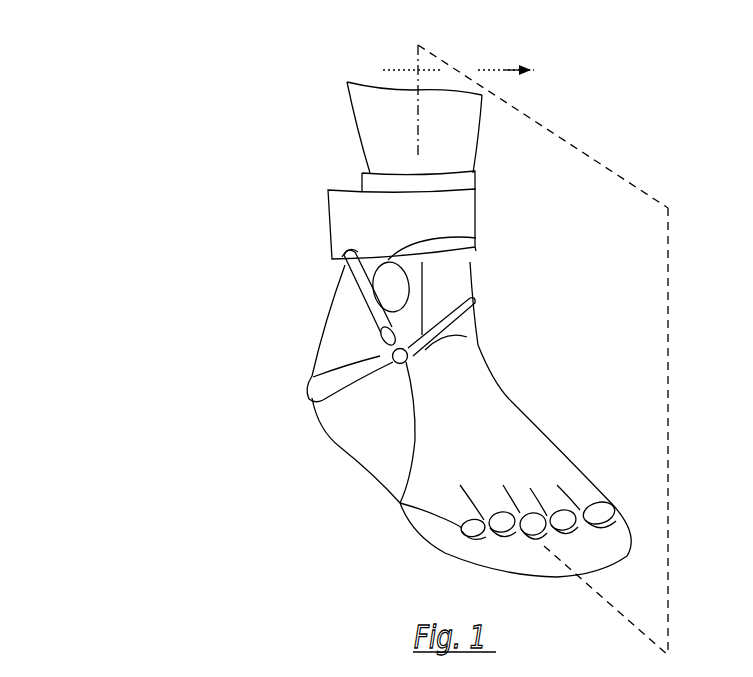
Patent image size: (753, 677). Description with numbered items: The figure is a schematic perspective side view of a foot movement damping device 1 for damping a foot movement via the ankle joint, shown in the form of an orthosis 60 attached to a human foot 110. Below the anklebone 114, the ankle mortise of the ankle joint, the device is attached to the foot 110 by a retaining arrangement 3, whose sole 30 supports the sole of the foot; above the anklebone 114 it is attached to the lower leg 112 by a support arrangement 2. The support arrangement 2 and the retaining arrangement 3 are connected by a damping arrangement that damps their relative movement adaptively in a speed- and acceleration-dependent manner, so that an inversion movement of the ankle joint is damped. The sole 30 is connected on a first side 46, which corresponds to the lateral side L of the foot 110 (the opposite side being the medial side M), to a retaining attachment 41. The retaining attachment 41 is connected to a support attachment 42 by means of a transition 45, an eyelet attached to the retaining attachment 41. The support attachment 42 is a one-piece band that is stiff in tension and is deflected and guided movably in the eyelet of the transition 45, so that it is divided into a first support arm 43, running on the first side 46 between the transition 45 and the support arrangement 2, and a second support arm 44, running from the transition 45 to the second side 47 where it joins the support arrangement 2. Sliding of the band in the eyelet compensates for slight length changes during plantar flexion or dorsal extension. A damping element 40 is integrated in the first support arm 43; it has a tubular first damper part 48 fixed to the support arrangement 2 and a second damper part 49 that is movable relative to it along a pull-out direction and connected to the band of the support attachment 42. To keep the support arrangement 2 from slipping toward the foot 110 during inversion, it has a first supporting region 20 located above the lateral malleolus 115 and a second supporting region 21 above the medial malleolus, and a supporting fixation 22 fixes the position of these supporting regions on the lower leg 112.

The foot movement damping device 1 is at (172, 218).
The support arrangement 2 is at (300, 178).
The retaining arrangement 3 is at (386, 546).
The first supporting region 20 is at (476, 238).
The second supporting region 21 is at (476, 250).
The supporting fixation 22 is at (470, 210).
The sole 30 is at (528, 565).
The damping element 40 is at (298, 309).
The retaining attachment 41 is at (370, 432).
The support attachment 42 is at (522, 297).
The first support arm 43 is at (357, 293).
The second support arm 44 is at (470, 304).
The transition 45 is at (312, 401).
The first side 46 is at (398, 70).
The second side 47 is at (500, 70).
The first damper part 48 is at (350, 261).
The second damper part 49 is at (392, 351).
The orthosis 60 is at (166, 48).
The foot 110 is at (543, 458).
The lower leg 112 is at (358, 100).
The anklebone 114 is at (250, 286).
The lateral malleolus 115 is at (398, 289).
The lateral side L is at (410, 65).
The medial side M is at (500, 70).